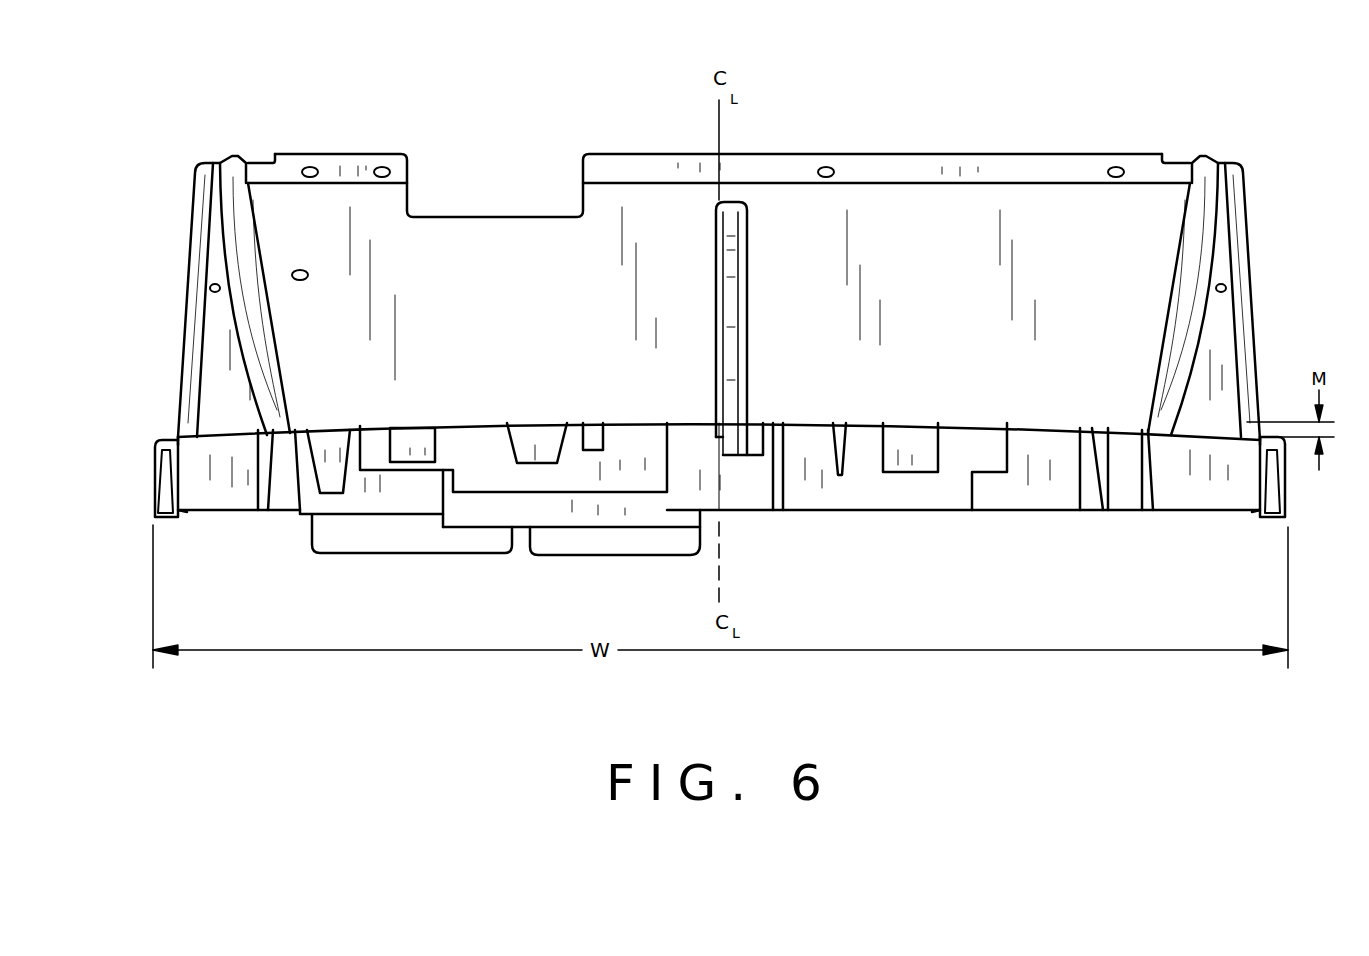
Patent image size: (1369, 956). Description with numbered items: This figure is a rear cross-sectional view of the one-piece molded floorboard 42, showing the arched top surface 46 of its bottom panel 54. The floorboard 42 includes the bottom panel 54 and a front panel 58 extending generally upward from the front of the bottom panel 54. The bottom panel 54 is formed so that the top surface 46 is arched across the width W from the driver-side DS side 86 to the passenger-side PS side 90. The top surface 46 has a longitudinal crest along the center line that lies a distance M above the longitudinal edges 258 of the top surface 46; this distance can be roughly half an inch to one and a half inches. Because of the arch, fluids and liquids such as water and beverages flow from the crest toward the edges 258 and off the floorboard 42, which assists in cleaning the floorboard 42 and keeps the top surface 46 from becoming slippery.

The floorboard 42 is at (590, 128).
The top surface 46 is at (228, 433).
The bottom panel 54 is at (813, 493).
The front panel 58 is at (927, 232).
The DS side 86 is at (177, 478).
The PS side 90 is at (1263, 492).
The longitudinal edges 258 is at (177, 440).